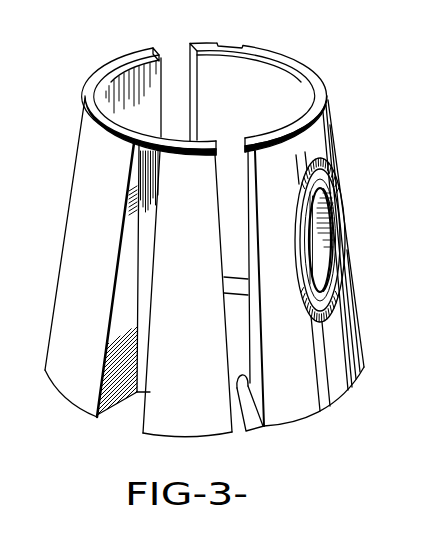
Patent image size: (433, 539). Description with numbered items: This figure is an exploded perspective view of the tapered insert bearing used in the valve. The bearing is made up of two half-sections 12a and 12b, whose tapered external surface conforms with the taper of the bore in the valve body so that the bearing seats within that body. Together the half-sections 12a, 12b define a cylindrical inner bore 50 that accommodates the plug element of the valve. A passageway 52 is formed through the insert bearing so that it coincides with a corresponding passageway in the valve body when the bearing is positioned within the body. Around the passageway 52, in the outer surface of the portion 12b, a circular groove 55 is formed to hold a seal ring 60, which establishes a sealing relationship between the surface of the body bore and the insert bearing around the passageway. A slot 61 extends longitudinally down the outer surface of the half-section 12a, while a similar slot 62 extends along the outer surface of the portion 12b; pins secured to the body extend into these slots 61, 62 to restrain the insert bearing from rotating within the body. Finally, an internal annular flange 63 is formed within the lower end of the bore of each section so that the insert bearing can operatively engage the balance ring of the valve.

The half-section of insert bearing 12a is at (90, 78).
The half-section of insert bearing 12b is at (337, 403).
The inner bore 50 is at (142, 52).
The passageway 52 is at (338, 243).
The circular groove 55 is at (338, 299).
The seal ring 60 is at (330, 318).
The slot 61 is at (99, 418).
The slot 62 is at (232, 40).
The internal annular flange 63 is at (251, 415).